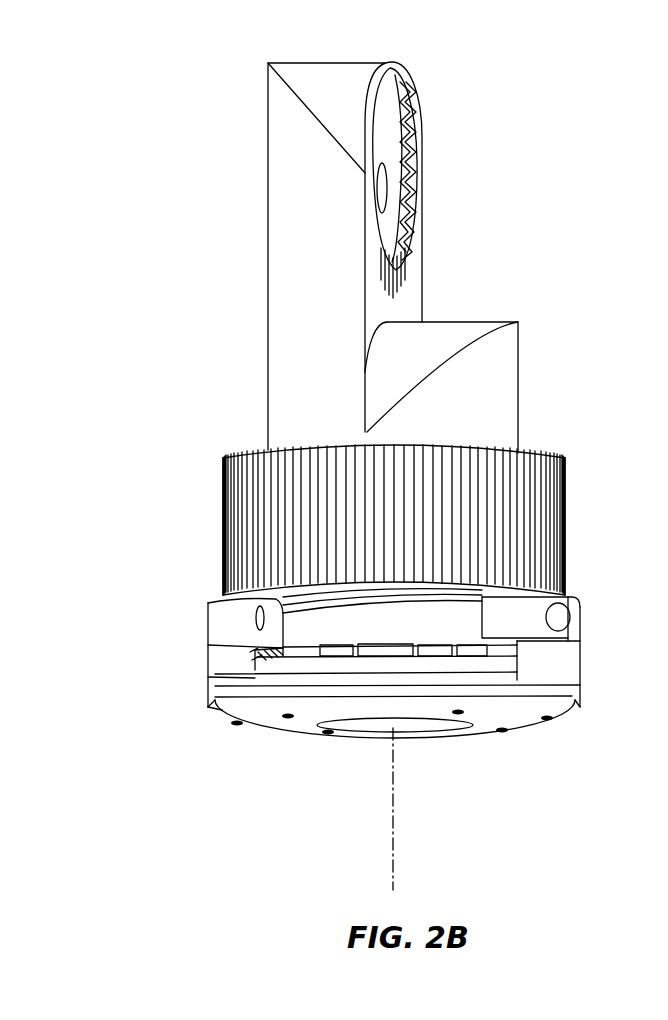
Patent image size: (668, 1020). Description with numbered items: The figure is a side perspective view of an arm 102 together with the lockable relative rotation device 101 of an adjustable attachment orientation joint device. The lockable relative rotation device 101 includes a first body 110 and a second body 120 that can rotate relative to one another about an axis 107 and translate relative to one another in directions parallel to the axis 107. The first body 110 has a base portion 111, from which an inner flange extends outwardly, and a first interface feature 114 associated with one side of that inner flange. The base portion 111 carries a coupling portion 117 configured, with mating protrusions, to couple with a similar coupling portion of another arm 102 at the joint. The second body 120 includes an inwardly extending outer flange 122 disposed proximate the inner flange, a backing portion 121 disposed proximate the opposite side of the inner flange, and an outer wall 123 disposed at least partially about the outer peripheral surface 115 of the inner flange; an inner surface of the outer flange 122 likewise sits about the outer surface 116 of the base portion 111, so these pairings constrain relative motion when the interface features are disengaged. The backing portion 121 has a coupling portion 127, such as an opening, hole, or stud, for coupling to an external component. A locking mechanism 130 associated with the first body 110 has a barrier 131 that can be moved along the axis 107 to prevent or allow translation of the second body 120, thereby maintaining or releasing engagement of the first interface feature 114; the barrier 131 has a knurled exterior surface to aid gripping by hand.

The lockable relative rotation device 101 is at (390, 718).
The arm 102 is at (337, 255).
The axis 107 is at (393, 834).
The first body 110 is at (241, 333).
The base portion 111 is at (281, 657).
The first interface feature 114 is at (362, 648).
The outer peripheral surface 115 is at (330, 658).
The outer surface 116 is at (387, 728).
The coupling portion 117 is at (405, 143).
The second body 120 is at (170, 669).
The backing portion 121 is at (412, 756).
The outer flange 122 is at (617, 628).
The outer wall 123 is at (601, 680).
The coupling portion 127 is at (284, 719).
The locking mechanism 130 is at (336, 498).
The barrier 131 is at (223, 488).